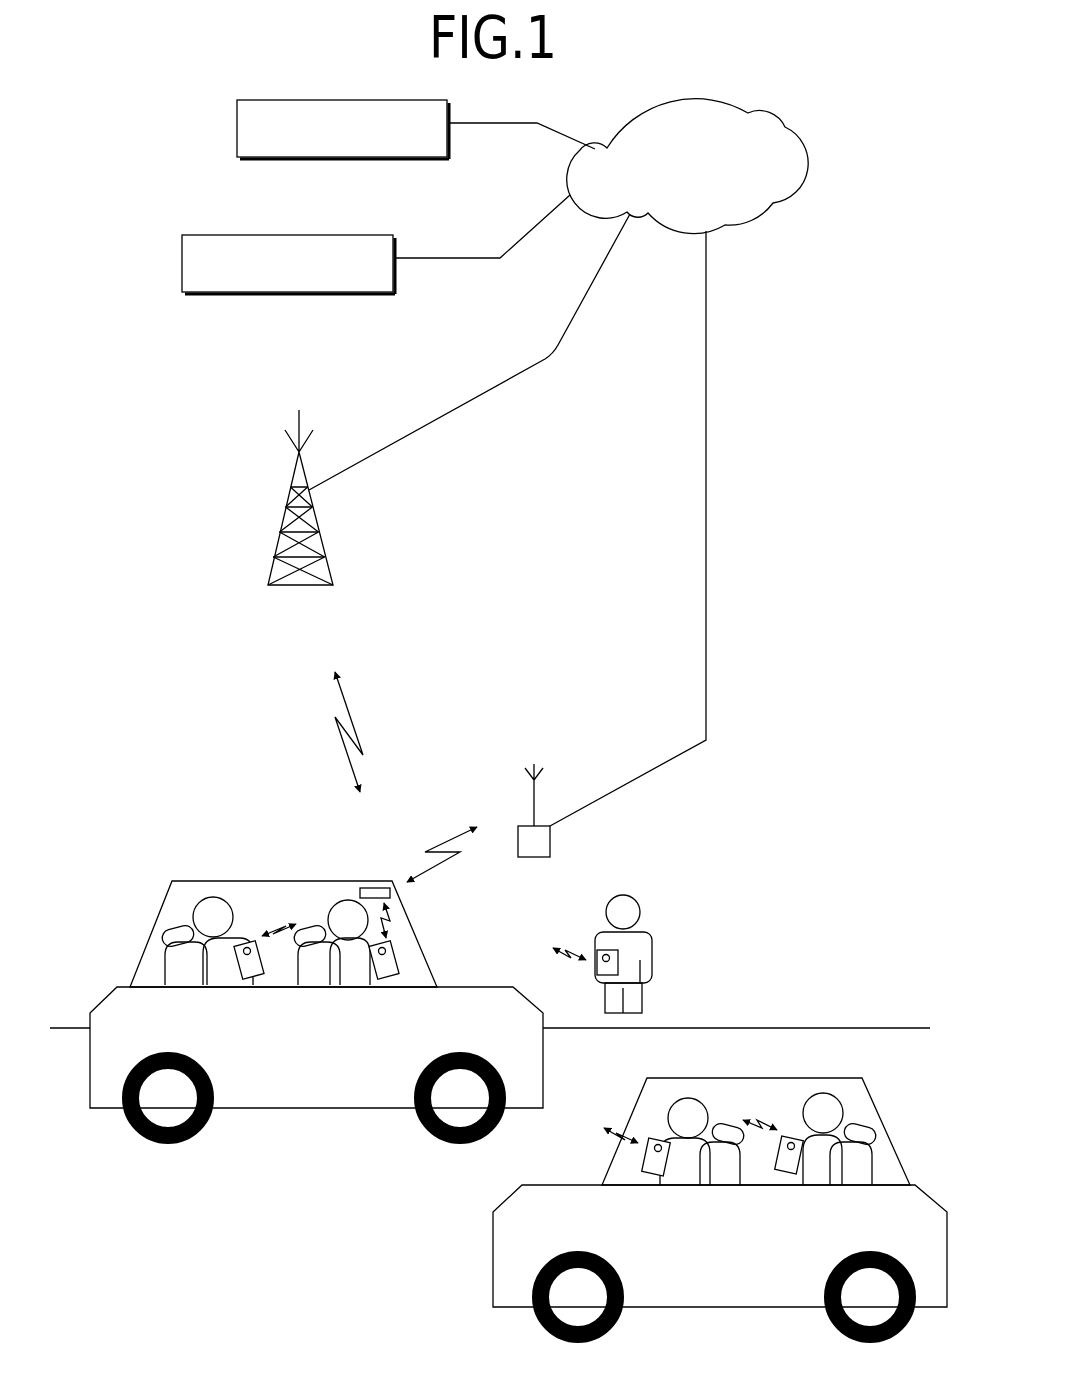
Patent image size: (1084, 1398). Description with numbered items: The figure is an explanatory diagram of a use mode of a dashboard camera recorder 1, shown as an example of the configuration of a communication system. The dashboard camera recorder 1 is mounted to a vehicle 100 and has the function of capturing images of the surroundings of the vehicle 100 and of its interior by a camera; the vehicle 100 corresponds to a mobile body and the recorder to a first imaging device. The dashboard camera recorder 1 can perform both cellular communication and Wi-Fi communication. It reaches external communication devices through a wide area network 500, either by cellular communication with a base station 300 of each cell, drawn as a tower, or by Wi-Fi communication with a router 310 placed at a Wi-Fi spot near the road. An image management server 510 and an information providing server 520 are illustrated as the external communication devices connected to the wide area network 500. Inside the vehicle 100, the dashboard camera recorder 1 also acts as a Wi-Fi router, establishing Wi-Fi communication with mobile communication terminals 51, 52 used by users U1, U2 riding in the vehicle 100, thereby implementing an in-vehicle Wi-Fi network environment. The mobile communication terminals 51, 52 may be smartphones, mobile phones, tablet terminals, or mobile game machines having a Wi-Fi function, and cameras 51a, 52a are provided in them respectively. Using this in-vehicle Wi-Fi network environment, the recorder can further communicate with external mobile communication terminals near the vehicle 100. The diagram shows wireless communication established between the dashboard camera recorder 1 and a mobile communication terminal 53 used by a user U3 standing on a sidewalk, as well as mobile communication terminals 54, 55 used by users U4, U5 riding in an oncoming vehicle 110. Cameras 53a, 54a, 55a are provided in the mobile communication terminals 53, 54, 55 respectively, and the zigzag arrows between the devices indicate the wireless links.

The dashboard camera recorder 1 is at (378, 888).
The mobile communication terminal 51 is at (398, 957).
The camera 51a is at (387, 948).
The mobile communication terminal 52 is at (243, 942).
The camera 52a is at (252, 950).
The mobile communication terminal 53 is at (605, 950).
The camera 53a is at (599, 975).
The mobile communication terminal 54 is at (643, 1156).
The camera 54a is at (654, 1145).
The mobile communication terminal 55 is at (785, 1138).
The camera 55a is at (793, 1142).
The vehicle 100 is at (160, 907).
The oncoming vehicle 110 is at (493, 1226).
The base station 300 is at (290, 487).
The router 310 is at (518, 826).
The wide area network 500 is at (782, 120).
The image management server 510 is at (342, 100).
The information providing server 520 is at (288, 235).
The user U1 is at (338, 905).
The user U2 is at (213, 897).
The user U3 is at (640, 905).
The user U4 is at (690, 1098).
The user U5 is at (825, 1093).